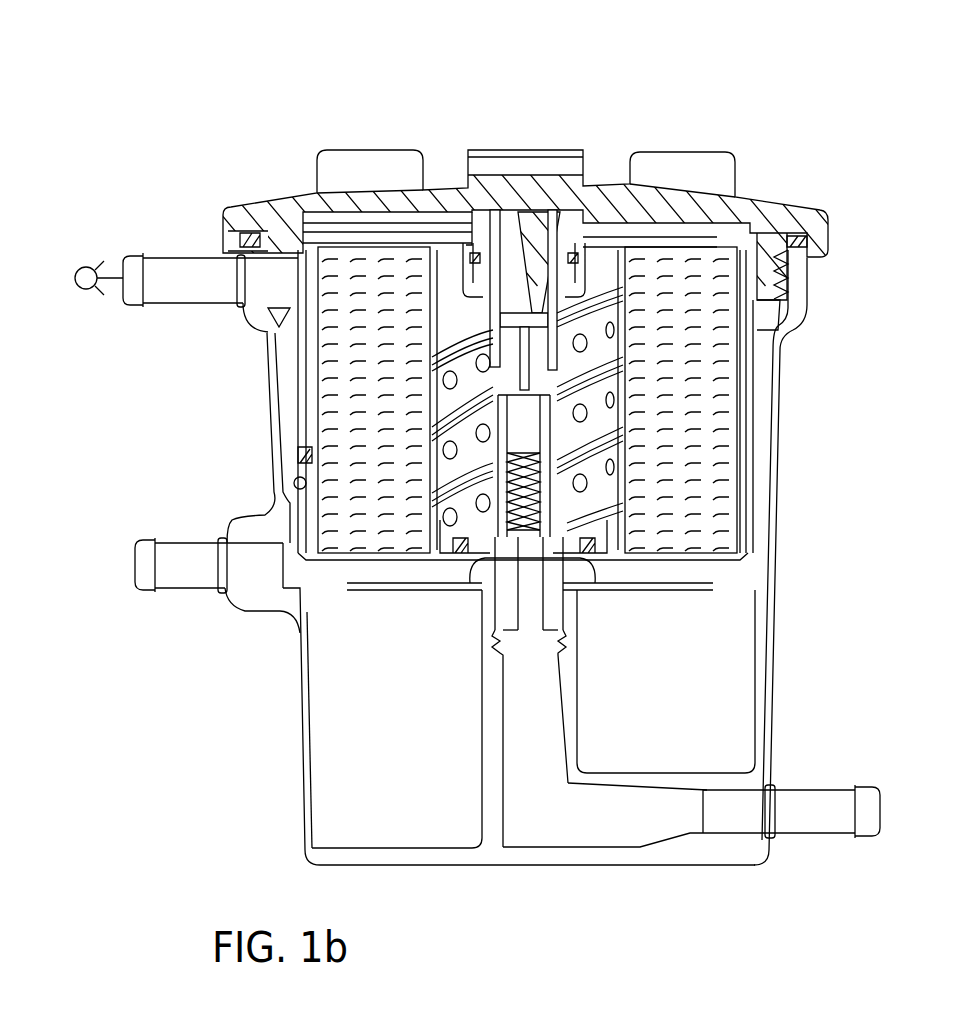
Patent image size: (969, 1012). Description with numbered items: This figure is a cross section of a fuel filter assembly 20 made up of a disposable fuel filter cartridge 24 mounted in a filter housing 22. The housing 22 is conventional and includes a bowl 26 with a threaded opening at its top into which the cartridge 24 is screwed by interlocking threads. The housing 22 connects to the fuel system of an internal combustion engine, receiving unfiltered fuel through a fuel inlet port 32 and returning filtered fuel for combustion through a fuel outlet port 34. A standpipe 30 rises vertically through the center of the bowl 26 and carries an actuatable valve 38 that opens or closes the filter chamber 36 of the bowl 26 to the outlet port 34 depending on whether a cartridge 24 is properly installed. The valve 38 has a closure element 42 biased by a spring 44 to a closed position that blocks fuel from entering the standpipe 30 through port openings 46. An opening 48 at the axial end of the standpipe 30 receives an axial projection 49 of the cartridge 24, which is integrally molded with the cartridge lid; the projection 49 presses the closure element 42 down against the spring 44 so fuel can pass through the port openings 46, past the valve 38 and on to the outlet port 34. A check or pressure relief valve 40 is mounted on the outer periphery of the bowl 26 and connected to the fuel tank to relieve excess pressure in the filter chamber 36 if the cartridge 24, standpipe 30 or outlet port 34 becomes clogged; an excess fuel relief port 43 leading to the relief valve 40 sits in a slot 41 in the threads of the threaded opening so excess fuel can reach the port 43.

The fuel filter assembly 20 is at (765, 123).
The filter housing 22 is at (790, 633).
The fuel filter cartridge 24 is at (604, 180).
The bowl 26 is at (303, 773).
The standpipe 30 is at (545, 470).
The fuel inlet port 32 is at (180, 555).
The fuel outlet port 34 is at (820, 810).
The filter chamber 36 is at (320, 653).
The actuatable valve 38 is at (543, 285).
The pressure relief valve 40 is at (91, 268).
The slot 41 is at (263, 330).
The closure element 42 is at (523, 367).
The excess fuel relief port 43 is at (185, 270).
The spring 44 is at (523, 540).
The port openings 46 is at (445, 392).
The opening 48 is at (494, 273).
The axial projection 49 is at (529, 273).